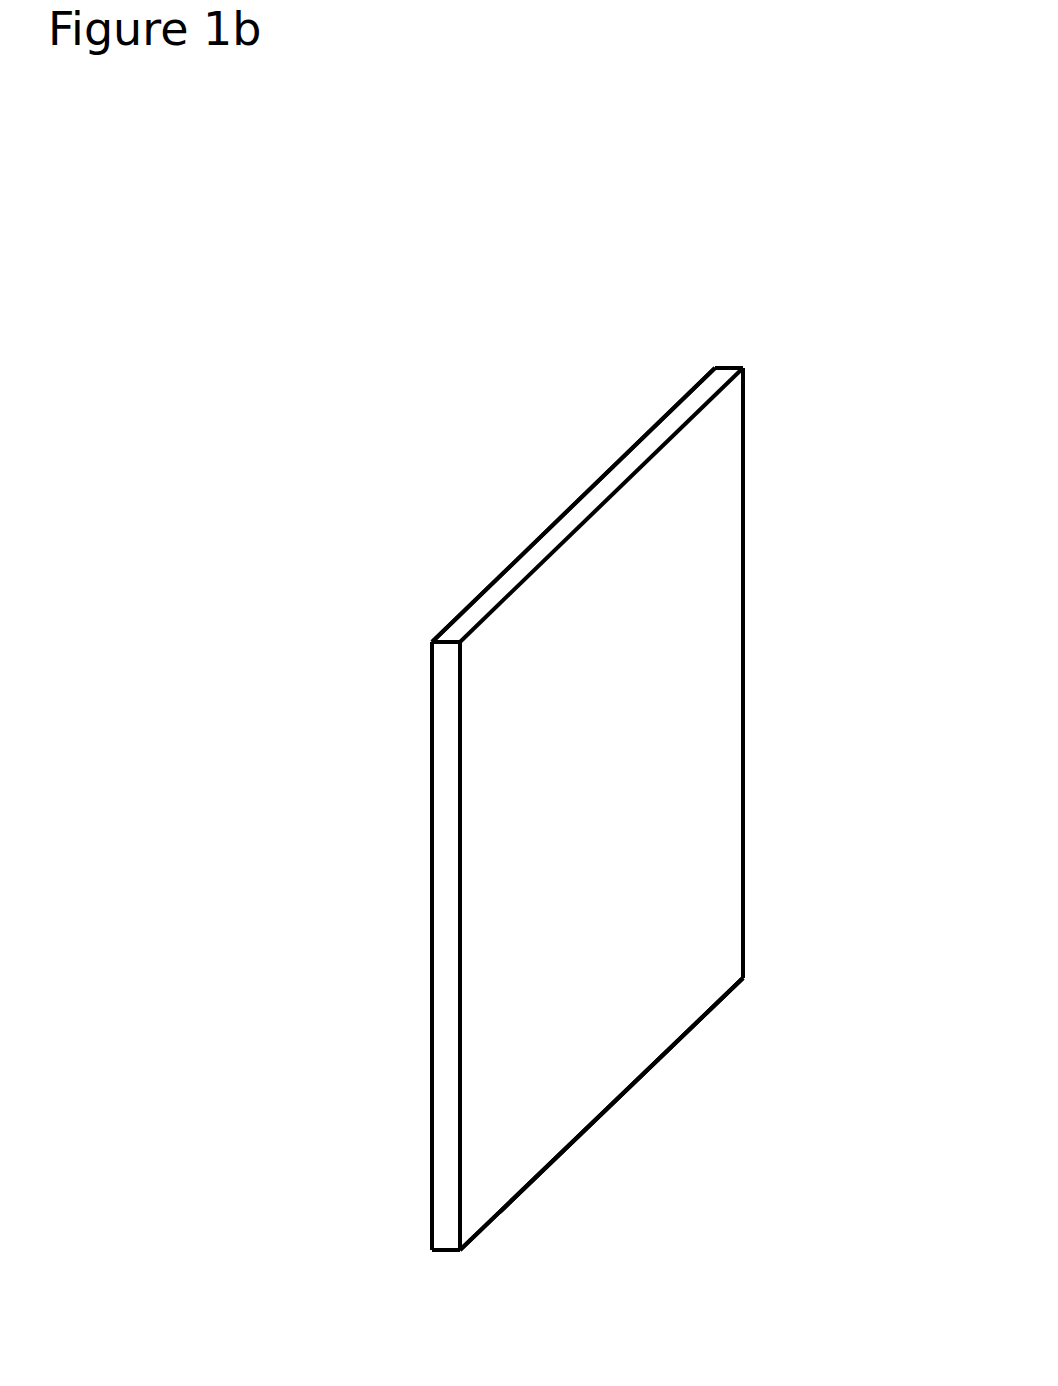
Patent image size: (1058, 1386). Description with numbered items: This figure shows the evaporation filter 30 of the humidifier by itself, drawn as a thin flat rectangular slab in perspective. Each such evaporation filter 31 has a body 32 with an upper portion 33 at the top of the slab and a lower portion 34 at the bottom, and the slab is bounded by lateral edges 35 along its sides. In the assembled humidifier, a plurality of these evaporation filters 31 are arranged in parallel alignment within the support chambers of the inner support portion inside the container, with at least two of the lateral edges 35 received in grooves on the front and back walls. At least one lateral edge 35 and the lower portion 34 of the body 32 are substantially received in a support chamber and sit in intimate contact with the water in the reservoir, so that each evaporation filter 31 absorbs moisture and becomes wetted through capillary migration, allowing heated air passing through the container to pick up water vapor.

The evaporation filter 30 is at (312, 318).
The evaporation filter 31 is at (746, 682).
The body 32 is at (563, 820).
The upper portion 33 is at (712, 468).
The lower portion 34 is at (643, 997).
The lateral edge 35 is at (565, 522).